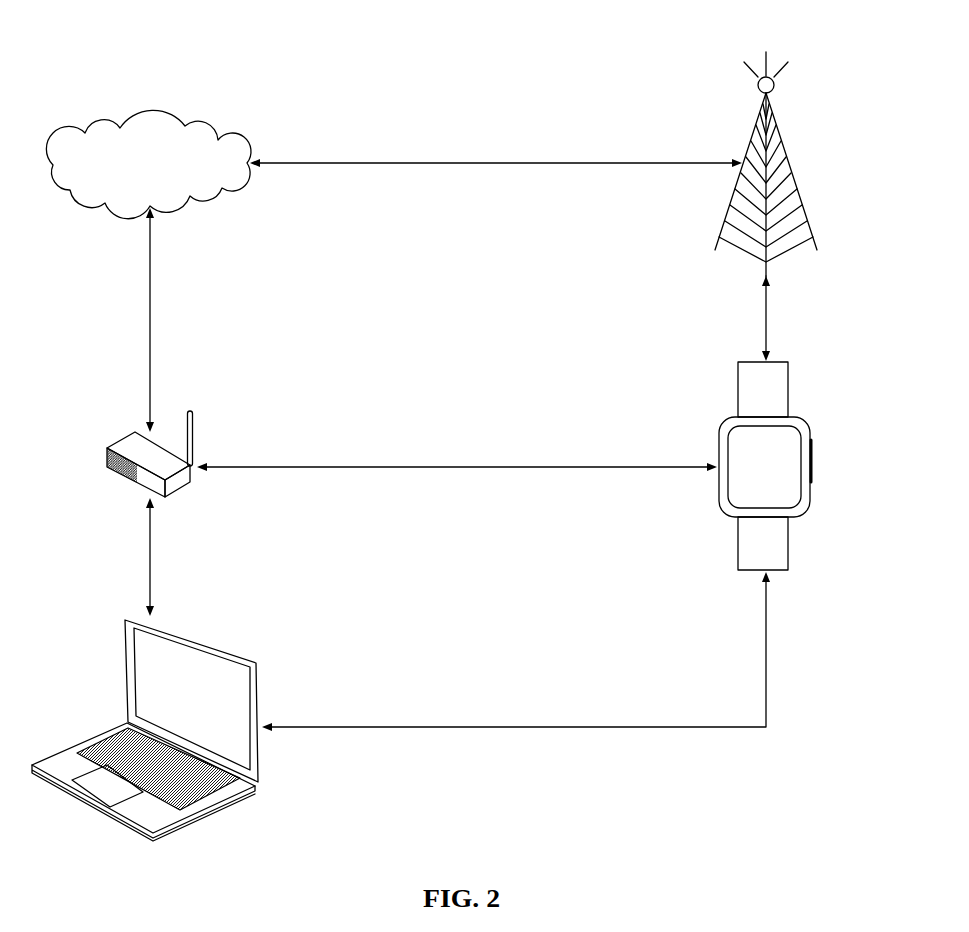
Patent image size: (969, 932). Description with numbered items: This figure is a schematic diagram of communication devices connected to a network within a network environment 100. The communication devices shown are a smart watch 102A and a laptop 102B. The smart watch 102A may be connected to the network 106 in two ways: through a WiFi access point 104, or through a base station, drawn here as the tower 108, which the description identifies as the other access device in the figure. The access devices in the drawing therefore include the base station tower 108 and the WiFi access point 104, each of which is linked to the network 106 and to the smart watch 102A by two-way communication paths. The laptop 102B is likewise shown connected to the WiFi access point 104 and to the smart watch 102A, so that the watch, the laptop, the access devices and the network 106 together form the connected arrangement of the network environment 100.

The network environment 100 is at (55, 66).
The smart watch 102A is at (812, 466).
The laptop 102B is at (215, 648).
The WiFi access point 104 is at (110, 445).
The network 106 is at (186, 128).
The cellular base station tower 108 is at (790, 152).